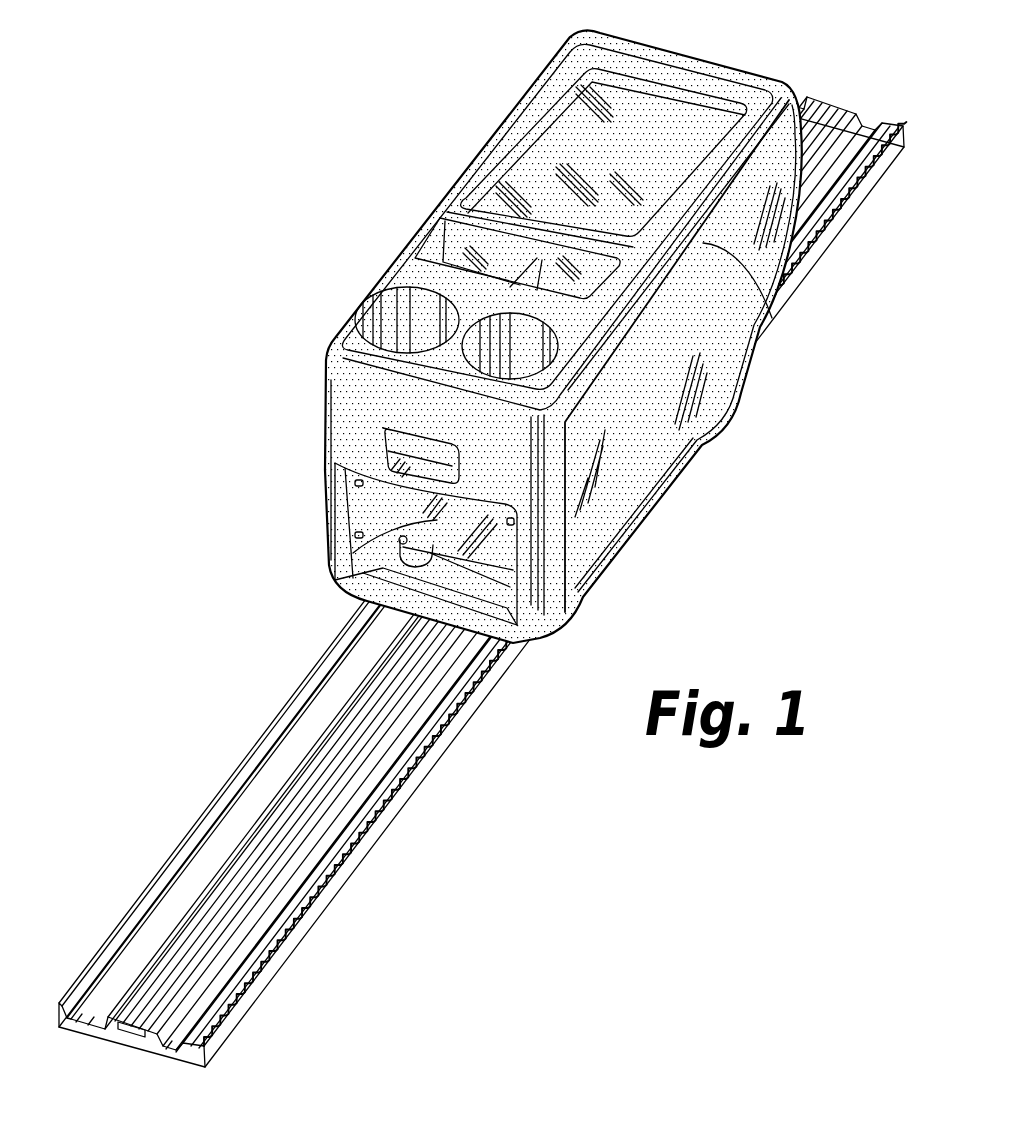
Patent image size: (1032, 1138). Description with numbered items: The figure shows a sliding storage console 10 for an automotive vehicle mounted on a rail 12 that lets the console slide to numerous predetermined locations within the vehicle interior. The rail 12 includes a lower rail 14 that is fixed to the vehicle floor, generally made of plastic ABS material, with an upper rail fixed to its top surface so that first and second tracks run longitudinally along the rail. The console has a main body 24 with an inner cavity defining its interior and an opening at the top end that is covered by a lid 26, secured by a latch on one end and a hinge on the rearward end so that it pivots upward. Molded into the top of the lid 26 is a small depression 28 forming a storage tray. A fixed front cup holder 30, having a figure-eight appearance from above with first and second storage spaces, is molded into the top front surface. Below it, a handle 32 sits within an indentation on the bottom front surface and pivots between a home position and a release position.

The sliding storage console 10 is at (192, 400).
The rail 12 is at (411, 797).
The lower rail 14 is at (282, 960).
The main body 24 is at (713, 366).
The lid 26 is at (758, 299).
The depression 28 is at (640, 120).
The fixed front cup holder 30 is at (513, 345).
The handle 32 is at (353, 572).